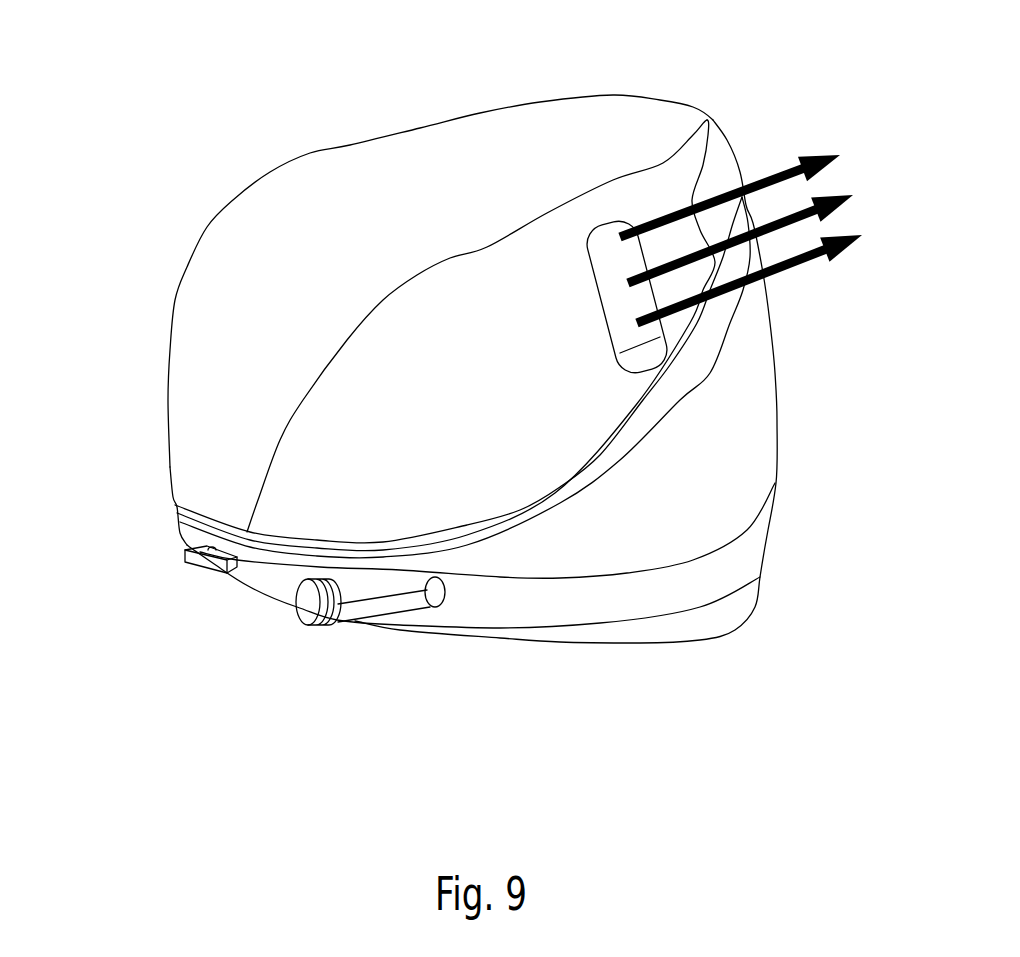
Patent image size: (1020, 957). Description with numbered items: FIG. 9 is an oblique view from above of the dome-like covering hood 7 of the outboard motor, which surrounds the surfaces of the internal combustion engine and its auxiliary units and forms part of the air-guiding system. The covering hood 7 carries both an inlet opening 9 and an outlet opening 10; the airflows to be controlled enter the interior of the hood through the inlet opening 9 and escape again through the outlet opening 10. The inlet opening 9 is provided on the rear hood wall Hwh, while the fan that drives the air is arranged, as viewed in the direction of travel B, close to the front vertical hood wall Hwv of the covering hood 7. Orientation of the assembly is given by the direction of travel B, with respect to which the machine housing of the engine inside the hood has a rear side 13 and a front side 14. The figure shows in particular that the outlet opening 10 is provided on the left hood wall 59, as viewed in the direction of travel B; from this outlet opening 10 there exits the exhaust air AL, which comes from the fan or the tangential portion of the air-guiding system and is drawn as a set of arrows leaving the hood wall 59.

The covering hood 7 is at (350, 145).
The inlet opening 9 is at (727, 110).
The outlet opening 10 is at (622, 333).
The rear side 13 is at (775, 138).
The front side 14 is at (130, 263).
The hood wall 59 is at (548, 337).
The exhaust air AL is at (790, 267).
The rear hood wall Hwh is at (157, 423).
The front vertical hood wall Hwv is at (782, 510).
The direction of travel B is at (142, 727).